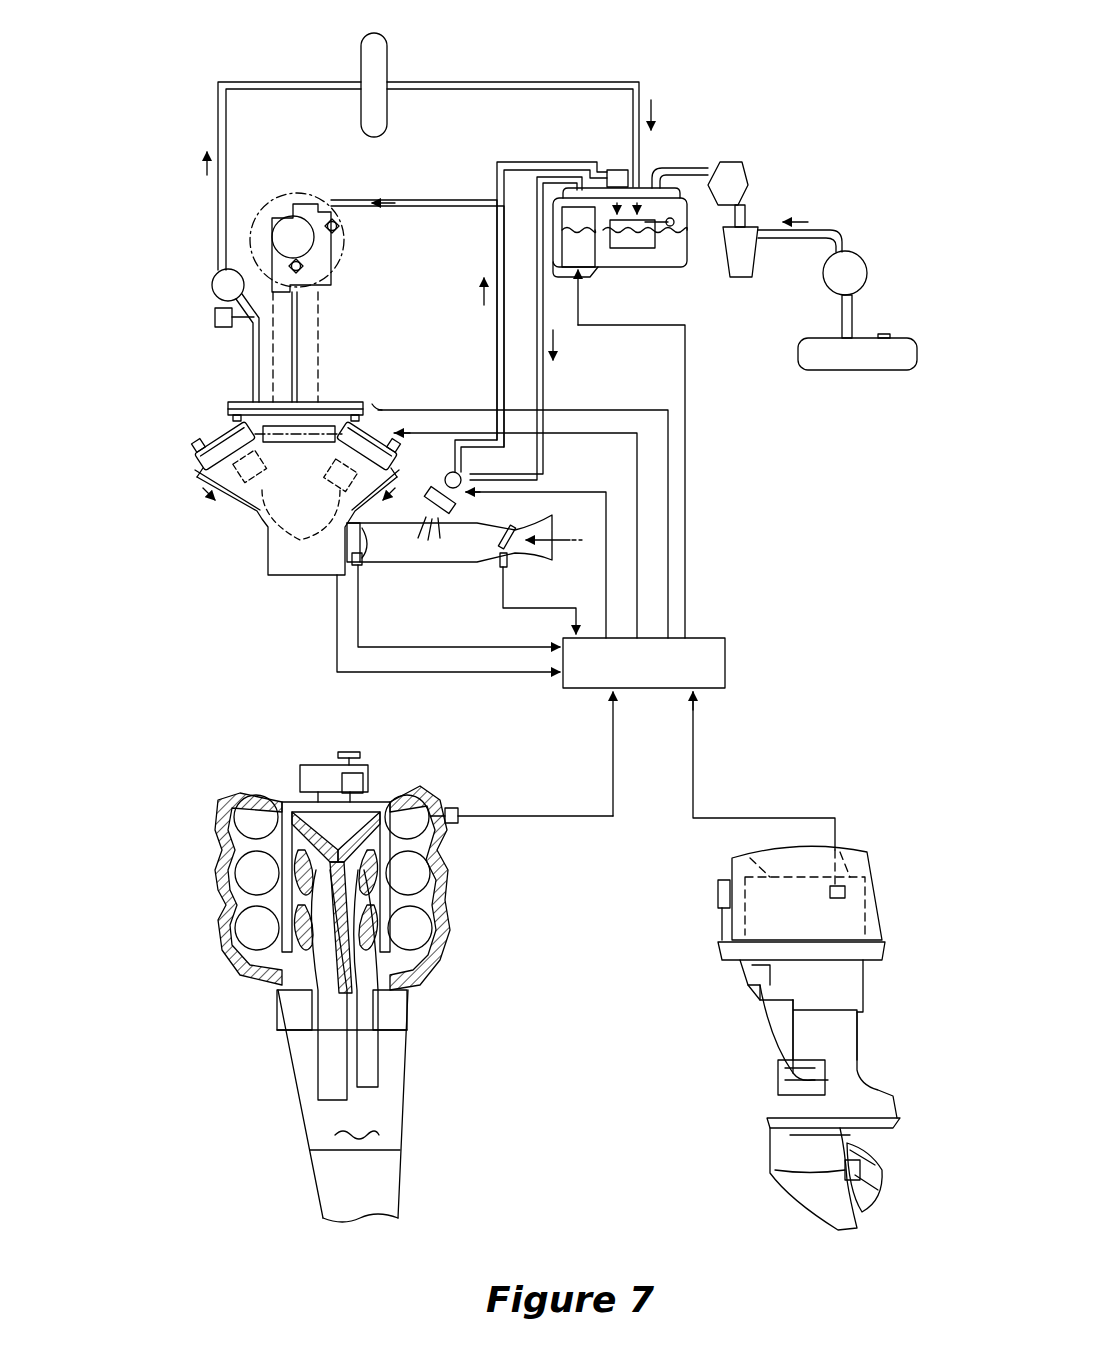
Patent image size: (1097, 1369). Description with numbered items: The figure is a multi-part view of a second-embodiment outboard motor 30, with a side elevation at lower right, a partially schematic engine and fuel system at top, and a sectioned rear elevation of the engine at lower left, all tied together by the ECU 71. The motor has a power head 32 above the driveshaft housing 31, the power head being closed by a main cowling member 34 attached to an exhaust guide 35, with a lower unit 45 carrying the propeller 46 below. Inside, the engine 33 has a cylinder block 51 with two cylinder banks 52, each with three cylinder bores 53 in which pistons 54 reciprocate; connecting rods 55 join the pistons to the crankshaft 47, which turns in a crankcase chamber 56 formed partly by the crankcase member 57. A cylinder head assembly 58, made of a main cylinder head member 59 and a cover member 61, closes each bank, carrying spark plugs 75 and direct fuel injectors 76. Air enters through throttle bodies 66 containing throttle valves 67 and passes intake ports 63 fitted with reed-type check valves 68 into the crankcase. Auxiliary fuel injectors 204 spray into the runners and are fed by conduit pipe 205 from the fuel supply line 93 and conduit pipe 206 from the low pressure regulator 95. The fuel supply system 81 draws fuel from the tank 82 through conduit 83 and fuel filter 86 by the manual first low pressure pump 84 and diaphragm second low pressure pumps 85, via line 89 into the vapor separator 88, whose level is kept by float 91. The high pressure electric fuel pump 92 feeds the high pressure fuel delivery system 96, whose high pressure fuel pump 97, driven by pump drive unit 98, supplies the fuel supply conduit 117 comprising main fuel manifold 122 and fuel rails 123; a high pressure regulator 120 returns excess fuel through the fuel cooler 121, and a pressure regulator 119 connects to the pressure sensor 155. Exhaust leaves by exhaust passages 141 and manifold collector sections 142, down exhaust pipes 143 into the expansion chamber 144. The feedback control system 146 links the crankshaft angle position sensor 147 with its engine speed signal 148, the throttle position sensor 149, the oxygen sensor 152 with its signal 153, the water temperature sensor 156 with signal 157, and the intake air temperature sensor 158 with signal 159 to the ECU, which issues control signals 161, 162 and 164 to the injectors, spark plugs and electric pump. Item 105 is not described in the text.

The outboard motor 30 is at (860, 835).
The driveshaft housing 31 is at (402, 1135).
The power head 32 is at (905, 957).
The internal combustion engine 33 is at (878, 930).
The main cowling member 34 is at (722, 900).
The exhaust guide 35 is at (400, 1020).
The lower unit 45 is at (320, 1175).
The propeller 46 is at (872, 1212).
The crankshaft 47 is at (300, 575).
The cylinder block 51 is at (235, 492).
The cylinder banks 52 is at (255, 520).
The cylinder bores 53 is at (250, 800).
The pistons 54 is at (260, 505).
The connecting rods 55 is at (278, 555).
The crankcase chamber 56 is at (290, 580).
The crankcase member 57 is at (290, 575).
The cylinder head assembly 58 is at (158, 486).
The main cylinder head member 59 is at (200, 457).
The cylinder head cover member 61 is at (395, 428).
The intake port 63 is at (340, 576).
The throttle bodies 66 is at (443, 545).
The throttle valve 67 is at (492, 560).
The reed-type check valves 68 is at (365, 565).
The ECU 71 is at (727, 666).
The spark plug 75 is at (385, 430).
The fuel injector 76 is at (360, 400).
The fuel supply system 81 is at (678, 56).
The main fuel supply tank 82 is at (870, 360).
The conduit 83 is at (858, 322).
The first low pressure pump 84 is at (860, 256).
The second low pressure pumps 85 is at (750, 186).
The fuel filter 86 is at (752, 262).
The vapor separator 88 is at (688, 262).
The line 89 is at (680, 168).
The float 91 is at (640, 246).
The high pressure electric fuel pump 92 is at (585, 262).
The fuel supply line 93 is at (395, 200).
The low pressure regulator 95 is at (615, 170).
The high pressure fuel delivery system 96 is at (282, 188).
The high pressure fuel pump 97 is at (295, 228).
The pump drive unit 98 is at (365, 775).
The pump drive 105 is at (248, 260).
The fuel supply conduit 117 is at (330, 398).
The pressure regulator 119 is at (213, 282).
The high pressure regulator 120 is at (548, 82).
The fuel cooler 121 is at (388, 52).
The main fuel manifold 122 is at (238, 402).
The fuel rails 123 is at (225, 915).
The exhaust passage 141 is at (330, 845).
The manifold collector sections 142 is at (330, 975).
The exhaust pipes 143 is at (318, 1070).
The expansion chamber 144 is at (357, 1122).
The feedback control system 146 is at (738, 585).
The crankshaft angle position sensor 147 is at (325, 576).
The engine speed signal 148 is at (440, 673).
The throttle position sensor 149 is at (517, 560).
The oxygen sensor 152 is at (462, 810).
The air fuel ratio signal 153 is at (620, 772).
The pressure sensor 155 is at (213, 316).
The water temperature sensor 156 is at (850, 890).
The cooling water temperature signal 157 is at (700, 766).
The intake air temperature sensor 158 is at (360, 575).
The intake air temperature signal 159 is at (450, 648).
The control signal to fuel injectors 161 is at (573, 432).
The control signal to spark plugs 162 is at (550, 410).
The control signal to high pressure electric fuel pump 164 is at (686, 402).
The auxiliary fuel injectors 204 is at (462, 508).
The conduit pipe 205 is at (578, 370).
The conduit pipe 206 is at (490, 255).